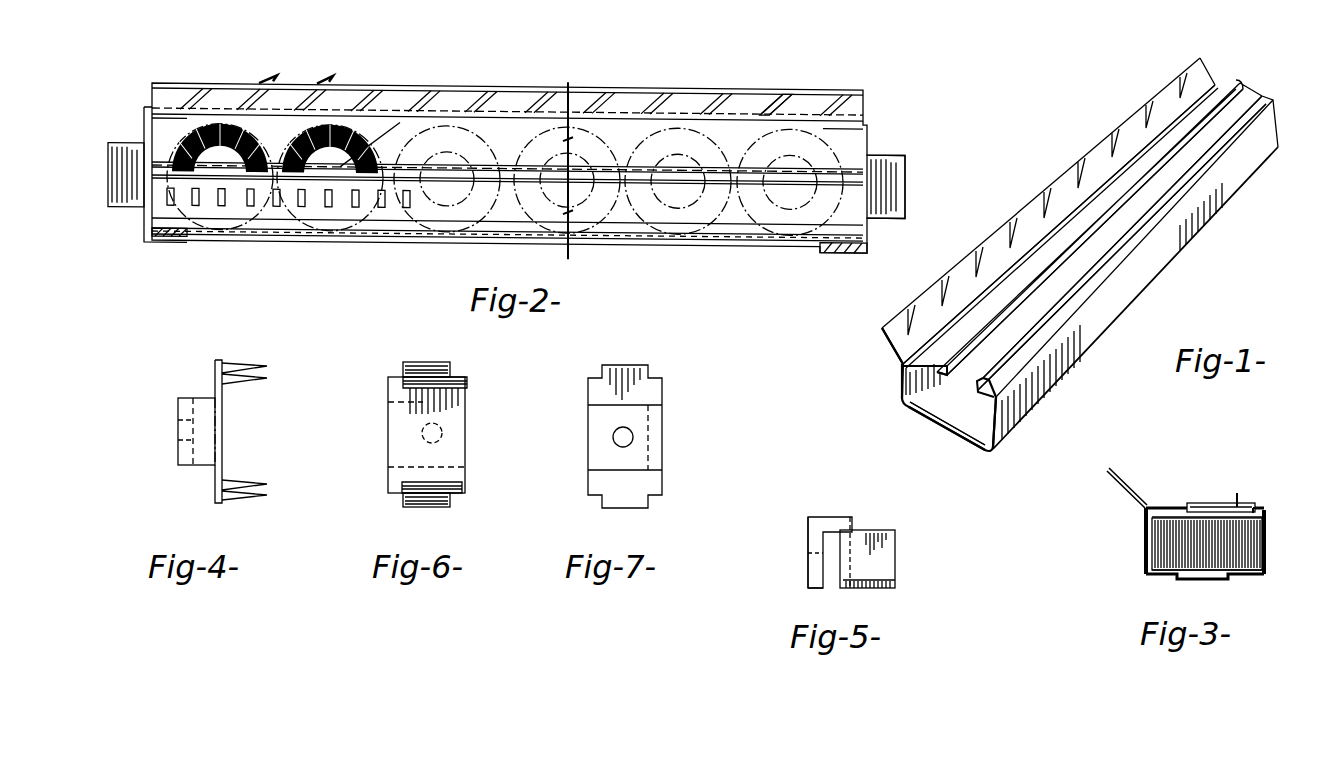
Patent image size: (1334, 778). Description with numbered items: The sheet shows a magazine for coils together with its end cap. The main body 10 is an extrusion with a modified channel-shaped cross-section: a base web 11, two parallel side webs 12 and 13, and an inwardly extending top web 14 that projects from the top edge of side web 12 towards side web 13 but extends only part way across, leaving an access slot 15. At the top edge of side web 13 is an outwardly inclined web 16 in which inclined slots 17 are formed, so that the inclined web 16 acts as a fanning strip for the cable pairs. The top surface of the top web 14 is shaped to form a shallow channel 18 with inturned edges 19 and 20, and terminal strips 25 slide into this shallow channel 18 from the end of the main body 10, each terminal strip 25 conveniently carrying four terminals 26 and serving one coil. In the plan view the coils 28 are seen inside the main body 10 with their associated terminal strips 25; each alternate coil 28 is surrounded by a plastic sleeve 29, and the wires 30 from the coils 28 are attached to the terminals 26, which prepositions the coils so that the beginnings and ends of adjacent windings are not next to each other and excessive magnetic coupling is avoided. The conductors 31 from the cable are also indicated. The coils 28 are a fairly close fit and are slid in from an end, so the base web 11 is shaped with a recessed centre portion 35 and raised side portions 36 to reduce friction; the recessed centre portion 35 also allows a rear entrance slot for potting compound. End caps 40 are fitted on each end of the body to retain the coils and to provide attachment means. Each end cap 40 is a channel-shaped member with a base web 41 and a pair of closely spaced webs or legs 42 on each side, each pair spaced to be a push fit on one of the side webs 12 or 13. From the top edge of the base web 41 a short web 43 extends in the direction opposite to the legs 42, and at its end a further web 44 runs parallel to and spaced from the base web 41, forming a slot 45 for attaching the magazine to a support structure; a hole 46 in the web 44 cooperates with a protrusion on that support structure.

In FIG. 1, the main body 10 is at (1250, 164).
In FIG. 1, the base web 11 is at (969, 438).
In FIG. 3, the base web 11 is at (1182, 578).
In FIG. 1, the side web 12 is at (994, 424).
In FIG. 3, the side web 12 is at (1268, 538).
In FIG. 1, the side web 13 is at (898, 392).
In FIG. 3, the side web 13 is at (1144, 546).
In FIG. 1, the top web 14 is at (917, 404).
In FIG. 3, the top web 14 is at (1262, 506).
In FIG. 1, the access slot 15 is at (898, 370).
In FIG. 3, the access slot 15 is at (1165, 505).
In FIG. 1, the inclined web 16 is at (894, 339).
In FIG. 3, the inclined web 16 is at (1133, 485).
In FIG. 2, the inclined slots 17 is at (790, 92).
In FIG. 1, the inclined slots 17 is at (1078, 160).
In FIG. 1, the shallow channel 18 is at (1105, 245).
In FIG. 1, the inturned edge 19 is at (1068, 270).
In FIG. 3, the inturned edge 19 is at (1196, 503).
In FIG. 1, the inturned edge 20 is at (1155, 205).
In FIG. 3, the inturned edge 20 is at (1262, 505).
In FIG. 2, the terminal strips 25 is at (272, 220).
In FIG. 3, the terminal strips 25 is at (1220, 503).
In FIG. 2, the terminals 26 is at (222, 206).
In FIG. 3, the terminals 26 is at (1242, 493).
In FIG. 3, the coils 28 is at (1256, 565).
In FIG. 2, the plastic sleeve 29 is at (392, 150).
In FIG. 2, the wires 30 is at (382, 206).
In FIG. 2, the conductors 31 is at (296, 118).
In FIG. 1, the recessed centre portion 35 is at (945, 425).
In FIG. 3, the recessed centre portion 35 is at (1225, 578).
In FIG. 3, the raised side portions 36 is at (1152, 577).
In FIG. 2, the end cap 40 is at (128, 143).
In FIG. 4, the end cap 40 is at (221, 423).
In FIG. 6, the end cap 40 is at (439, 423).
In FIG. 7, the end cap 40 is at (648, 424).
In FIG. 5, the end cap 40 is at (839, 544).
In FIG. 4, the base web 41 is at (222, 400).
In FIG. 4, the webs or legs 42 is at (265, 367).
In FIG. 6, the webs or legs 42 is at (453, 372).
In FIG. 4, the short web 43 is at (200, 455).
In FIG. 5, the short web 43 is at (838, 517).
In FIG. 5, the web 44 is at (808, 538).
In FIG. 5, the slot 45 is at (833, 585).
In FIG. 4, the hole 46 is at (178, 432).
In FIG. 6, the hole 46 is at (442, 433).
In FIG. 7, the hole 46 is at (624, 437).
In FIG. 5, the hole 46 is at (823, 562).